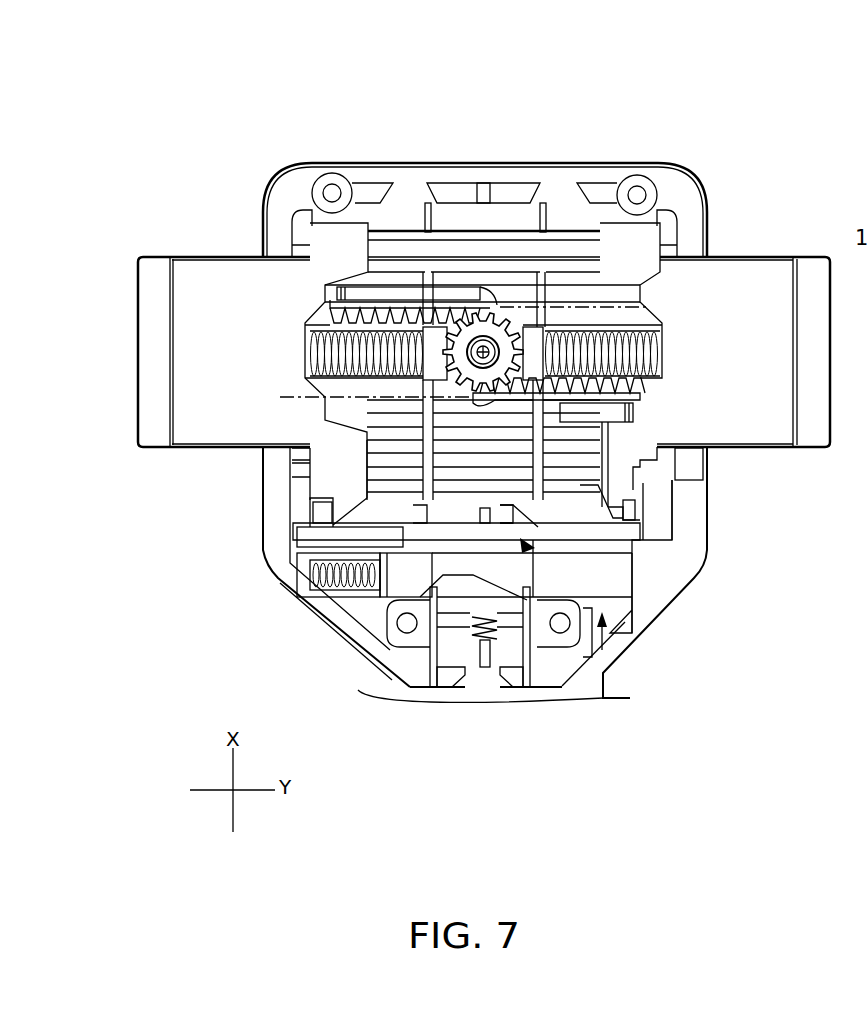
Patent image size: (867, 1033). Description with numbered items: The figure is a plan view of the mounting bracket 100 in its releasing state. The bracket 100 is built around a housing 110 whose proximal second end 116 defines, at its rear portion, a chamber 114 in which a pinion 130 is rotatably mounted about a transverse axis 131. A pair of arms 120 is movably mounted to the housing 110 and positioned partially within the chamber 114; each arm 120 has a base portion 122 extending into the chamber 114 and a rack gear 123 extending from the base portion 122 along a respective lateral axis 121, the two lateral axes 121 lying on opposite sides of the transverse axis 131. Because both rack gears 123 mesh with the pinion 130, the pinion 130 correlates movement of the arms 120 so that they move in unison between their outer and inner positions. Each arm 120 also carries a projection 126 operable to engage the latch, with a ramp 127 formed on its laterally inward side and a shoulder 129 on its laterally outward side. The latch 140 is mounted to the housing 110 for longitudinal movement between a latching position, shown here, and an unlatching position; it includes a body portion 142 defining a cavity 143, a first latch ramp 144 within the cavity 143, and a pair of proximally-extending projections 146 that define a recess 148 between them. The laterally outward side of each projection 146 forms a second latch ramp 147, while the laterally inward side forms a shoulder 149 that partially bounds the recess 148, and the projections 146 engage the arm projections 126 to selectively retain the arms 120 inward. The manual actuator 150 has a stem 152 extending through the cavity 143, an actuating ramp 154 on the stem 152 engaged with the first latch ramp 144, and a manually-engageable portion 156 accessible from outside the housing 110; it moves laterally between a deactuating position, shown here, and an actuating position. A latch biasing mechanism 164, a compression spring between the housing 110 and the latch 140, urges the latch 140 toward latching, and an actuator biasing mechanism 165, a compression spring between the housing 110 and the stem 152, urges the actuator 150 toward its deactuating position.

The mounting bracket 100 is at (338, 68).
The housing 110 is at (335, 163).
The chamber 114 is at (405, 236).
The proximal second end 116 is at (246, 184).
The arms 120 is at (153, 232).
The lateral axis 121 is at (653, 312).
The base portion 122 is at (226, 257).
The rack gear 123 is at (442, 288).
The projection 126 is at (307, 477).
The ramp 127 is at (338, 502).
The shoulder 129 is at (312, 505).
The pinion 130 is at (490, 318).
The transverse axis 131 is at (490, 360).
The latch 140 is at (455, 445).
The body portion 142 is at (540, 645).
The cavity 143 is at (533, 552).
The first latch ramp 144 is at (503, 584).
The projections 146 is at (395, 597).
The second latch ramp 147 is at (408, 518).
The recess 148 is at (487, 500).
The shoulder 149 is at (430, 508).
The manual actuator 150 is at (605, 630).
The stem 152 is at (358, 690).
The actuating ramp 154 is at (437, 640).
The manually-engageable portion 156 is at (707, 553).
The latch biasing mechanism 164 is at (486, 642).
The actuator biasing mechanism 165 is at (330, 590).